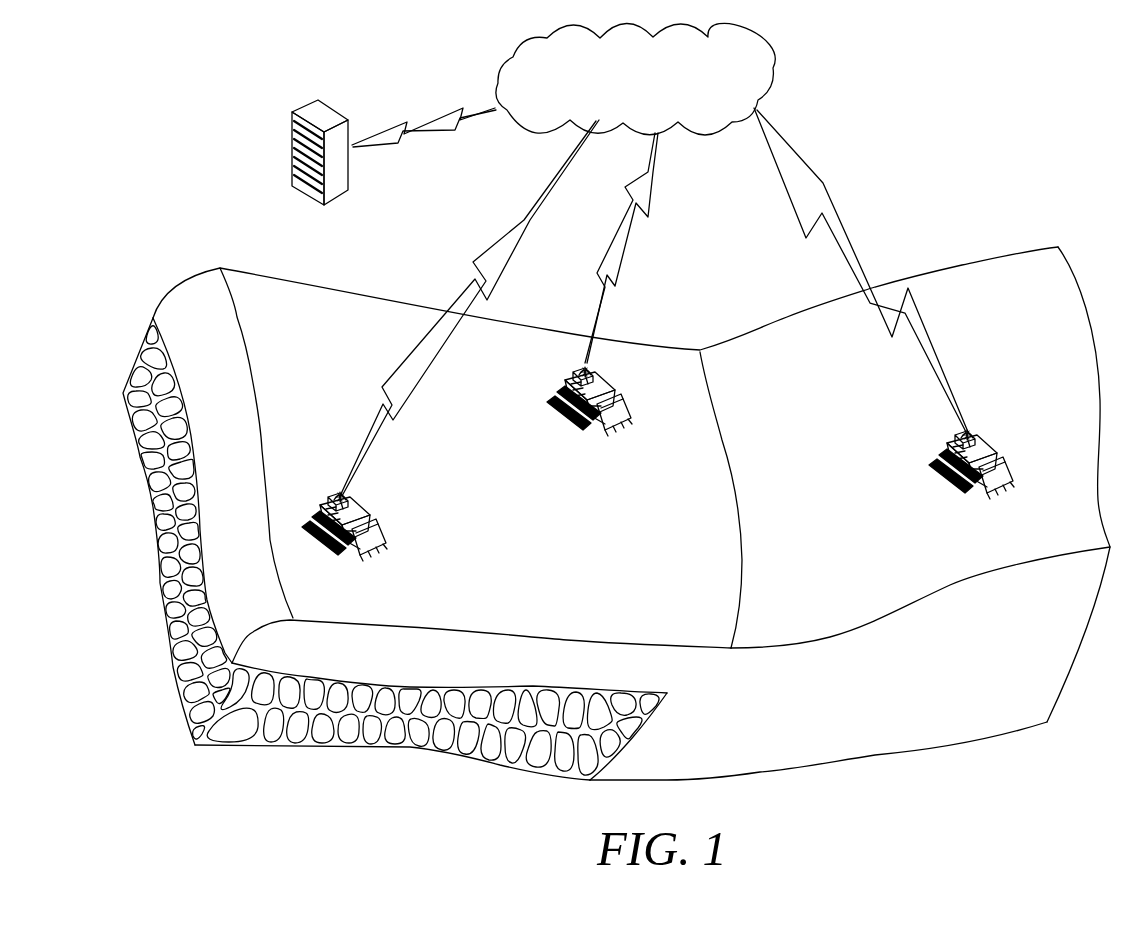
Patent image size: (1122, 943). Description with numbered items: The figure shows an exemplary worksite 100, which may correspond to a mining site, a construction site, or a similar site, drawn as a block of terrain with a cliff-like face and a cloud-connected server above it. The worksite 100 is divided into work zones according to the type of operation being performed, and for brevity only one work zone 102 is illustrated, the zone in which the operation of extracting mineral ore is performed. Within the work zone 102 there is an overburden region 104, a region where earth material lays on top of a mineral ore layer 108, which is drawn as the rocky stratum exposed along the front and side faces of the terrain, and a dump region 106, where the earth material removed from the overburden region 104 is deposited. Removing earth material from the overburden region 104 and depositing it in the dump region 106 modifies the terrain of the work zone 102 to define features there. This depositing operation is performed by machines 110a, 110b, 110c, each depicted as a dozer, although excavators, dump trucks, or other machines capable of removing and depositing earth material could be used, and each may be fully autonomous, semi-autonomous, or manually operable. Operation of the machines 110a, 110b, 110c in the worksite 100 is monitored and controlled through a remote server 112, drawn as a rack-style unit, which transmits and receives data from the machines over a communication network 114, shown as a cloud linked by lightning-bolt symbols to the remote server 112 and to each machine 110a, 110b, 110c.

The worksite 100 is at (988, 129).
The work zone 102 is at (689, 245).
The overburden region 104 is at (624, 340).
The dump region 106 is at (817, 322).
The mineral ore layer 108 is at (390, 718).
The machine 110a is at (620, 396).
The machine 110b is at (374, 529).
The machine 110c is at (1006, 462).
The remote server 112 is at (292, 115).
The communication network 114 is at (656, 91).